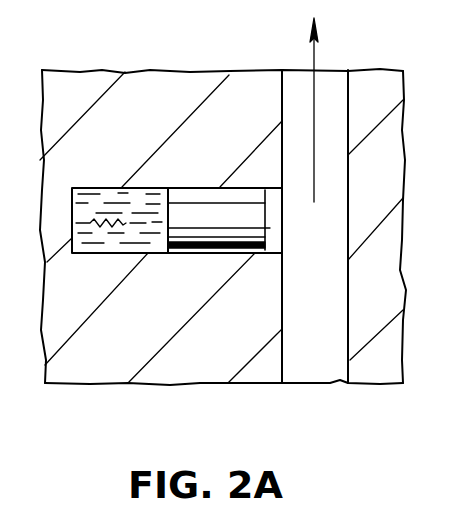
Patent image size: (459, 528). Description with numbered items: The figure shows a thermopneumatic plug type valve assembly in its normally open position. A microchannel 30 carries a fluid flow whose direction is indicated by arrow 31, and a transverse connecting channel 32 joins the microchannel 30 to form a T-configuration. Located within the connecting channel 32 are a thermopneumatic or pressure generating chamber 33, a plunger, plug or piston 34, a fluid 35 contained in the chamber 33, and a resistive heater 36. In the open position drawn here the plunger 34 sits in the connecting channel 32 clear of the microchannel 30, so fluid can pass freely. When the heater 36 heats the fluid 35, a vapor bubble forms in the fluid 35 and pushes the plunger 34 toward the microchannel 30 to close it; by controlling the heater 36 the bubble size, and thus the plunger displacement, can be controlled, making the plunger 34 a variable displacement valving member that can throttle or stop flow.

The microchannel 30 is at (331, 294).
The arrow 31 is at (312, 83).
The transverse connecting channel 32 is at (192, 253).
The thermopneumatic chamber 33 is at (149, 188).
The plunger 34 is at (196, 213).
The fluid 35 is at (88, 204).
The resistive heater 36 is at (110, 228).